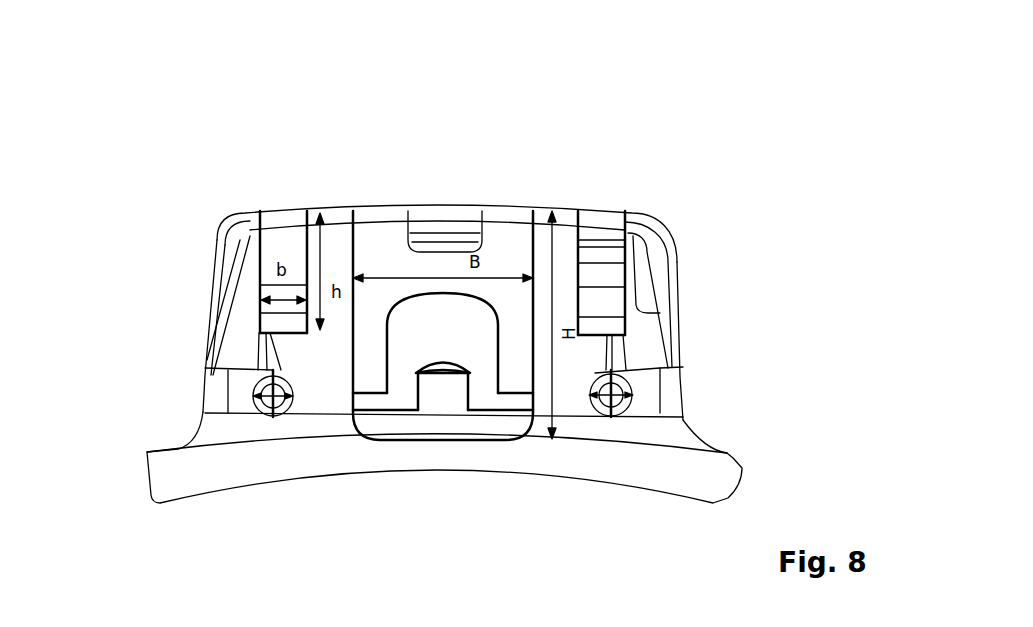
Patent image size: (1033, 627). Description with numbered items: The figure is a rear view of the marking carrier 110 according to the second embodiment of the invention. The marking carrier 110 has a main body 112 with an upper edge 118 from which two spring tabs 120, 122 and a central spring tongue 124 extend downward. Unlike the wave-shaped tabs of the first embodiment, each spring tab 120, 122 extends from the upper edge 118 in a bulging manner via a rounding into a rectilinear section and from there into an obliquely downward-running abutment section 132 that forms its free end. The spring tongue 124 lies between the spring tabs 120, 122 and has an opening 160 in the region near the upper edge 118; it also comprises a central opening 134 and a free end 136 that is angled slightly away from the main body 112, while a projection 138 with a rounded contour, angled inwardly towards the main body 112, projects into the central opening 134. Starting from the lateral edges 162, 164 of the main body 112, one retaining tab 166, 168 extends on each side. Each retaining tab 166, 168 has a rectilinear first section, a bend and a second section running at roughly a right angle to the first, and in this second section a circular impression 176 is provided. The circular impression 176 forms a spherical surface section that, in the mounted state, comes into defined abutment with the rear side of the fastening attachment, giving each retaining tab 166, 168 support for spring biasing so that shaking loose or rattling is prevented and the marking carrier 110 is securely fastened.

The marking carrier 110 is at (672, 195).
The main body 112 is at (707, 476).
The upper edge 118 is at (354, 208).
The spring tab 120 is at (280, 243).
The spring tab 122 is at (596, 302).
The spring tongue 124 is at (490, 257).
The abutment section 132 is at (218, 340).
The central opening 134 is at (427, 333).
The free end 136 is at (425, 433).
The projection 138 is at (437, 390).
The opening 160 is at (429, 211).
The lateral edge 162 is at (216, 266).
The lateral edge 164 is at (672, 264).
The retaining tab 166 is at (253, 397).
The retaining tab 168 is at (653, 398).
The circular impression 176 is at (255, 417).